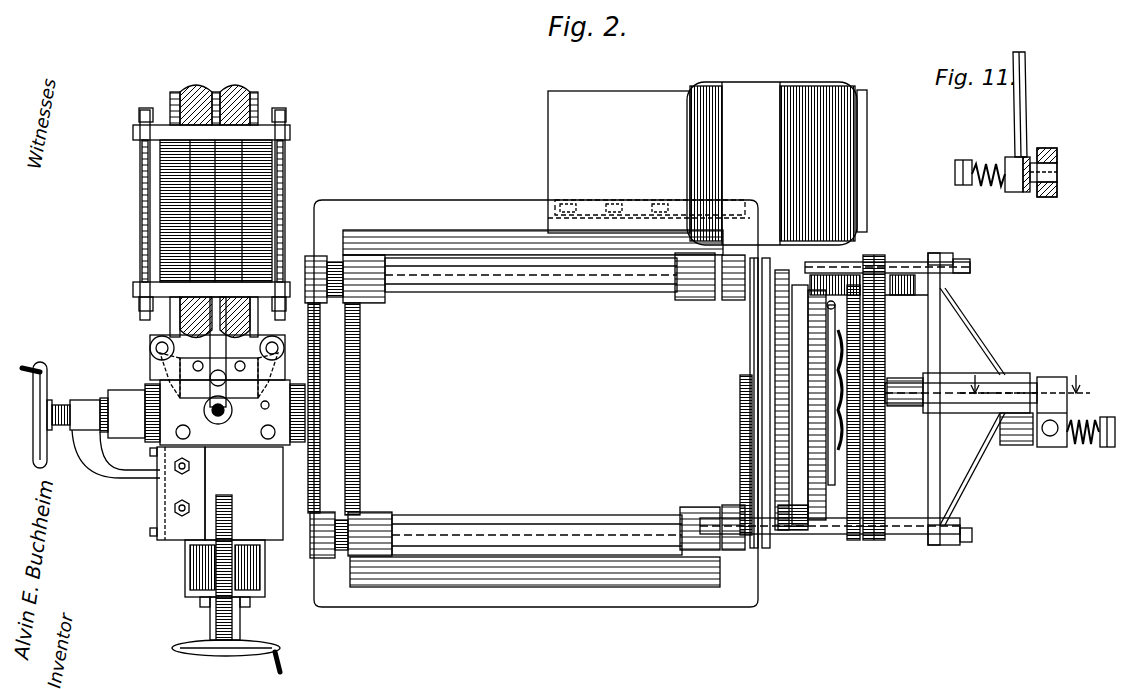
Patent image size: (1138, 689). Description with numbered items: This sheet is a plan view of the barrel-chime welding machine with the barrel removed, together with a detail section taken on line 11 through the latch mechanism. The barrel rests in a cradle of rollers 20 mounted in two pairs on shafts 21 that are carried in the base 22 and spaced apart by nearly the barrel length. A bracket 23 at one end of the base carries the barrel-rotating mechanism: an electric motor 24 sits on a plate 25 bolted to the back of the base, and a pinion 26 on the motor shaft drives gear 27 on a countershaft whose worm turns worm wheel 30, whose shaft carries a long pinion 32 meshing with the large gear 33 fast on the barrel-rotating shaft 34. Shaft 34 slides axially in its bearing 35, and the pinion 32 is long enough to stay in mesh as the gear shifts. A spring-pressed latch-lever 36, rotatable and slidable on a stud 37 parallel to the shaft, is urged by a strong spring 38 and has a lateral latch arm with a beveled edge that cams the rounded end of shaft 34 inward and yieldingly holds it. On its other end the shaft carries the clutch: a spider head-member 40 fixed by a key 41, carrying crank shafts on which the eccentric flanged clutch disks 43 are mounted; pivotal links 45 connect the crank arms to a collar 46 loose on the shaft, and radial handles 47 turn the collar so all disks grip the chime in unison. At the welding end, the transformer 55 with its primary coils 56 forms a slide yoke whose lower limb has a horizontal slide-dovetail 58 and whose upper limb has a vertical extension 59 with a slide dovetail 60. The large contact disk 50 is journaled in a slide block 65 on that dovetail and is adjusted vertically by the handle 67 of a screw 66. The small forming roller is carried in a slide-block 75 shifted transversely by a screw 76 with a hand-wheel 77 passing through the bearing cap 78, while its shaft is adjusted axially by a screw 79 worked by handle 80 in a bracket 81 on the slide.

In FIG. 2, the section line 11— 11 is at (1033, 384).
In FIG. 2, the rollers 20 is at (316, 256).
In FIG. 2, the shafts 21 is at (536, 292).
In FIG. 2, the base 22 is at (575, 605).
In FIG. 2, the bracket 23 is at (920, 452).
In FIG. 2, the electric motor 24 is at (777, 163).
In FIG. 2, the plate 25 is at (628, 103).
In FIG. 2, the pinion 26 is at (805, 268).
In FIG. 2, the gear 27 is at (915, 295).
In FIG. 2, the worm wheel 30 is at (860, 534).
In FIG. 2, the pinion 32 is at (910, 405).
In FIG. 2, the large gear 33 is at (878, 540).
In FIG. 2, the barrel rotating shaft 34 is at (905, 378).
In FIG. 11, the barrel rotating shaft 34 is at (1057, 170).
In FIG. 2, the bearing 35 is at (958, 372).
In FIG. 11, the bearing 35 is at (1047, 148).
In FIG. 2, the latch-lever 36 is at (1058, 380).
In FIG. 11, the latch-lever 36 is at (1010, 157).
In FIG. 2, the stud 37 is at (1110, 417).
In FIG. 11, the stud 37 is at (955, 173).
In FIG. 2, the spring 38 is at (1085, 446).
In FIG. 11, the spring 38 is at (988, 186).
In FIG. 2, the head-member 40 is at (775, 340).
In FIG. 2, the key 41 is at (775, 320).
In FIG. 2, the clutch disks 43 is at (735, 300).
In FIG. 2, the pivotal links 45 is at (830, 310).
In FIG. 2, the collar 46 is at (808, 378).
In FIG. 2, the radial handles 47 is at (860, 345).
In FIG. 2, the contact disk 50 is at (322, 442).
In FIG. 2, the electric transformer 55 is at (240, 185).
In FIG. 2, the primary coils 56 is at (230, 82).
In FIG. 2, the horizontal slide-dovetail 58 is at (190, 568).
In FIG. 2, the vertical extension 59 is at (170, 335).
In FIG. 2, the slide dovetail 60 is at (150, 348).
In FIG. 2, the slide block 65 is at (185, 405).
In FIG. 2, the screw 66 is at (262, 346).
In FIG. 2, the handle 67 is at (200, 450).
In FIG. 2, the slide-block 75 is at (250, 510).
In FIG. 2, the screw 76 is at (232, 578).
In FIG. 2, the hand-wheel 77 is at (258, 656).
In FIG. 2, the bearing cap 78 is at (210, 615).
In FIG. 2, the screw 79 is at (62, 405).
In FIG. 2, the handle 80 is at (40, 362).
In FIG. 2, the bracket 81 is at (118, 468).